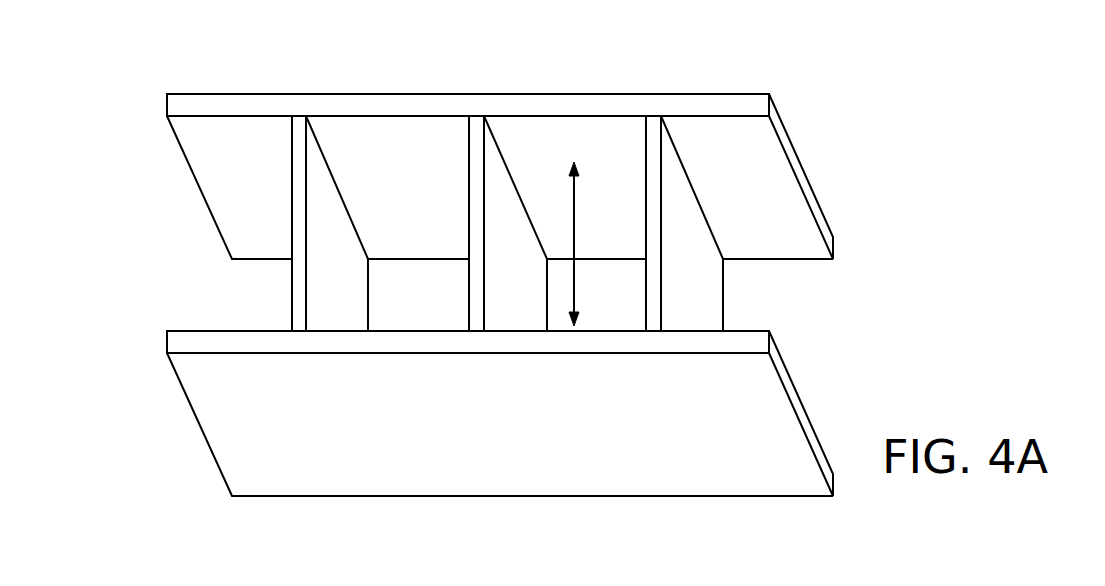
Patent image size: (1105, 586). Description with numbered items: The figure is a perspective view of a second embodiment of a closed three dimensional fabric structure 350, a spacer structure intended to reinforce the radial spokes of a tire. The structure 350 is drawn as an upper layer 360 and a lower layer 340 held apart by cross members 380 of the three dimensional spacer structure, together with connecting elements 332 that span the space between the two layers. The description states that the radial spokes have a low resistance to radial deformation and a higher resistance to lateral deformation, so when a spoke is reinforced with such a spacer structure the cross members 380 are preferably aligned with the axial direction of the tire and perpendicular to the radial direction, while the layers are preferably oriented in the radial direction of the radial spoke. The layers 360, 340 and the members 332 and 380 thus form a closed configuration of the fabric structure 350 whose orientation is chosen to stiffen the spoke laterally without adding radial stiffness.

The closed three dimensional fabric structure 350 is at (158, 88).
The spacer pillar 332 is at (376, 197).
The top substrate 360 is at (413, 103).
The cross members of the three dimensional spacer structure 380 is at (682, 215).
The bottom substrate 340 is at (650, 447).